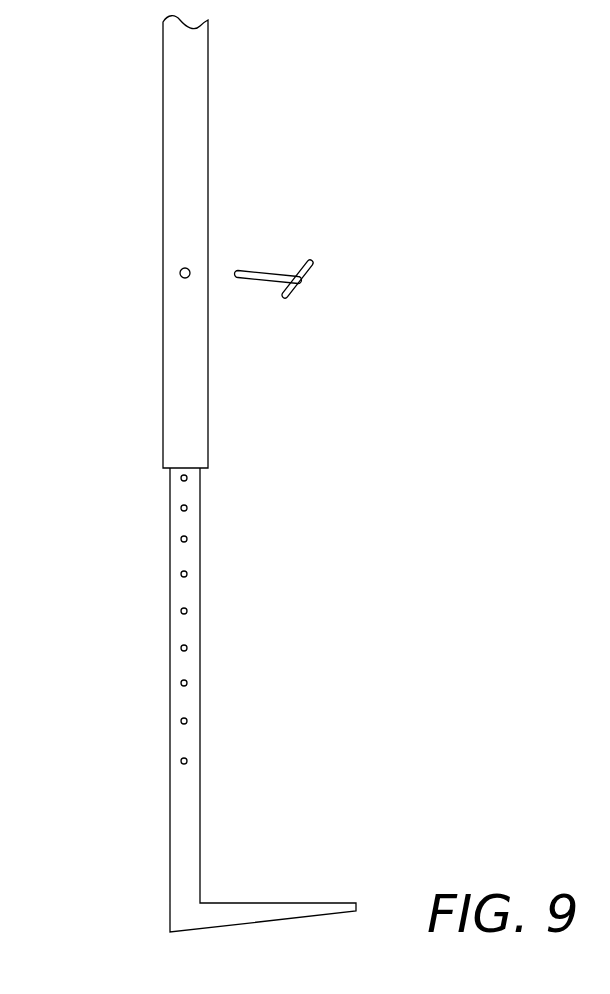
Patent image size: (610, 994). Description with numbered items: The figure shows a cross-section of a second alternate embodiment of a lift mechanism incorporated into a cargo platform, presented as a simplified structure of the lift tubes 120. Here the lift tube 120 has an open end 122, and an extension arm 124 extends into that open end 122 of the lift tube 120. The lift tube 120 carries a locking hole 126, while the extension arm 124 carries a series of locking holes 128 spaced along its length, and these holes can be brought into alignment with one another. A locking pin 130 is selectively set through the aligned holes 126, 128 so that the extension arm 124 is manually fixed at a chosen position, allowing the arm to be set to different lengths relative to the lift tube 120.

The lift tube 120 is at (163, 80).
The open end 122 is at (193, 470).
The extension arm 124 is at (182, 807).
The locking hole 126 is at (180, 273).
The locking holes 128 is at (181, 538).
The locking pin 130 is at (297, 291).